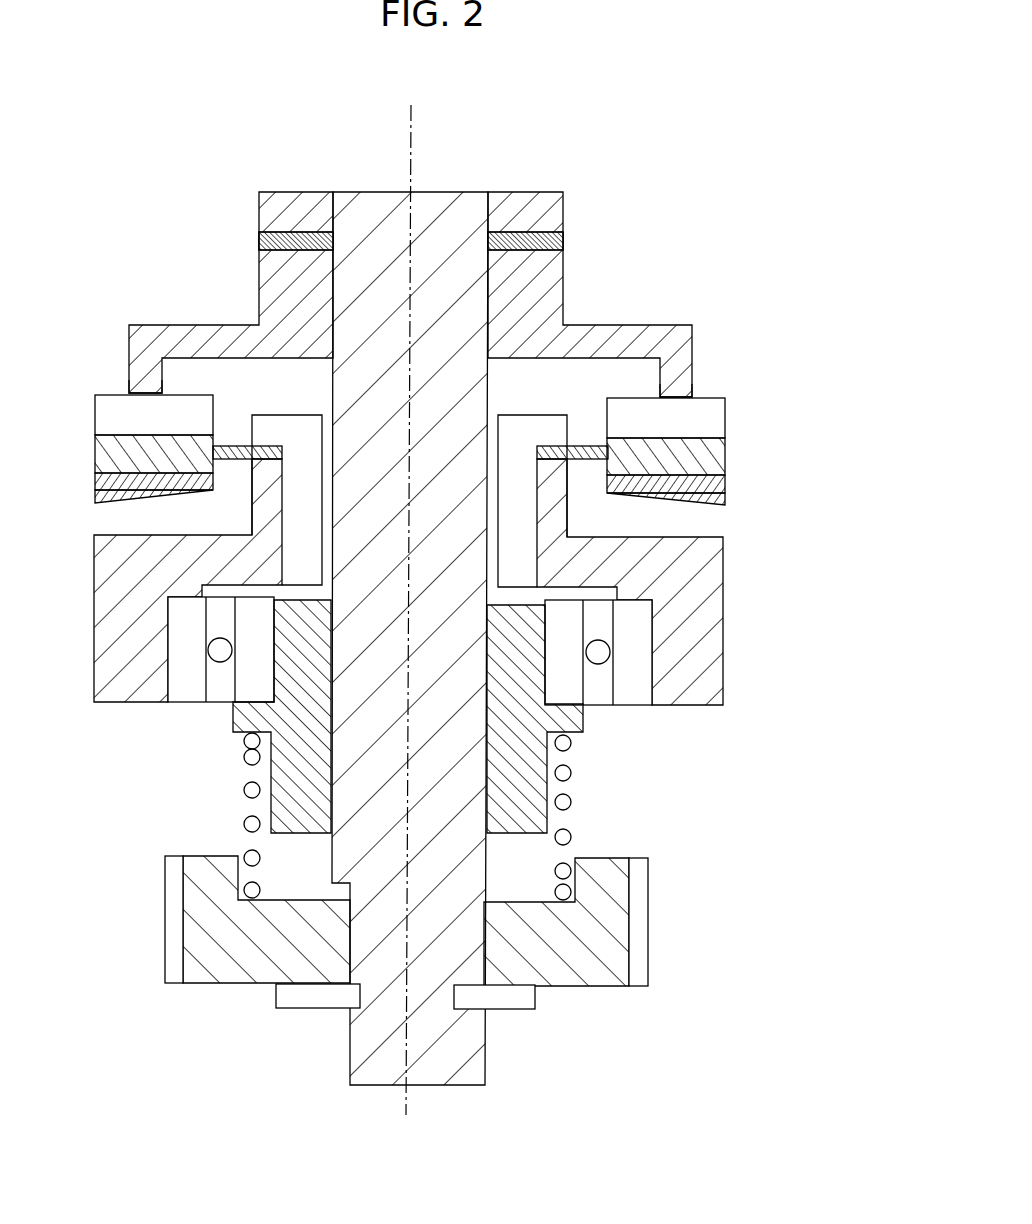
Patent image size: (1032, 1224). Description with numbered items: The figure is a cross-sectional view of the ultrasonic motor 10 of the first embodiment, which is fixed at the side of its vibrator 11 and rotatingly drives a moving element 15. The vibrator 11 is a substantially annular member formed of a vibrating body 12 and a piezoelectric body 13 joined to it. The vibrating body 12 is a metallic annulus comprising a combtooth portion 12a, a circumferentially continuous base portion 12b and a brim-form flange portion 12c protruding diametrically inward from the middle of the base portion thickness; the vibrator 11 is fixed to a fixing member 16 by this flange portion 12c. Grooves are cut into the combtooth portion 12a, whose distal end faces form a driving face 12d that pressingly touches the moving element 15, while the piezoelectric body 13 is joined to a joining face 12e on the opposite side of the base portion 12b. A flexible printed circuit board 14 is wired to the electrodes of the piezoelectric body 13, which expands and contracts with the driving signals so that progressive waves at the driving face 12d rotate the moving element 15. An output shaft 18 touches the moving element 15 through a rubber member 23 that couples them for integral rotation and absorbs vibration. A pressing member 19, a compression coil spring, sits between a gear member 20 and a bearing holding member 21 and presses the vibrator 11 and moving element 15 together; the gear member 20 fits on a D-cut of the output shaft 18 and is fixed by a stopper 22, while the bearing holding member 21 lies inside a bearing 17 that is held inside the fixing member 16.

The ultrasonic motor 10 is at (723, 202).
The vibrator 11 is at (474, 435).
The vibrating body 12 is at (450, 428).
The combtooth portion 12a is at (703, 420).
The base portion 12b is at (707, 457).
The flange portion 12c is at (582, 453).
The driving face 12d is at (130, 392).
The joining face 12e is at (98, 484).
The piezoelectric body 13 is at (720, 488).
The flexible printed circuit board 14 is at (692, 504).
The moving element 15 is at (553, 295).
The fixing member 16 is at (703, 595).
The bearing 17 is at (632, 692).
The output shaft 18 is at (465, 280).
The pressing member 19 is at (570, 802).
The gear member 20 is at (587, 972).
The bearing holding member 21 is at (267, 717).
The stopper 22 is at (522, 1002).
The rubber member 23 is at (263, 240).